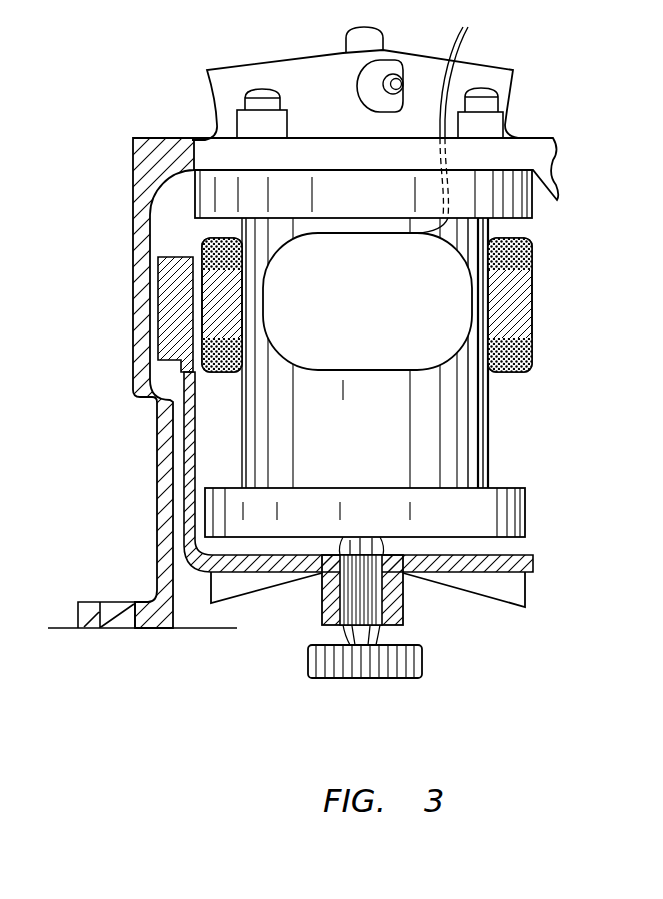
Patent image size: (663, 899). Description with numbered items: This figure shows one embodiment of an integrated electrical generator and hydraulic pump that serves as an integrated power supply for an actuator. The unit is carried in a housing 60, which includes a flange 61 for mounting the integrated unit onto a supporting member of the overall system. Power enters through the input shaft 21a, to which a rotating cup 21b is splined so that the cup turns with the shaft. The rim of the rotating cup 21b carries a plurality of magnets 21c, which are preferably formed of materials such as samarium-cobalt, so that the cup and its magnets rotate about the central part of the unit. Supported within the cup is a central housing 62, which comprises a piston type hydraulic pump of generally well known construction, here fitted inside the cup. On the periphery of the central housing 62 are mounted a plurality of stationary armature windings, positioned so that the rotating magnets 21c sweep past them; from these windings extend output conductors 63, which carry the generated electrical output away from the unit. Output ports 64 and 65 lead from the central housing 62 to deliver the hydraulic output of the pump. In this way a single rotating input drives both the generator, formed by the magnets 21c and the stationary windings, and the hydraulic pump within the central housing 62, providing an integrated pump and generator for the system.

The housing 60 is at (163, 512).
The flange 61 is at (90, 607).
The central housing 62 is at (458, 428).
The output conductors 63 is at (463, 48).
The output port 64 is at (257, 65).
The output port 65 is at (428, 60).
The input shaft 21a is at (370, 633).
The rotating cup 21b is at (187, 447).
The magnets 21c is at (178, 270).